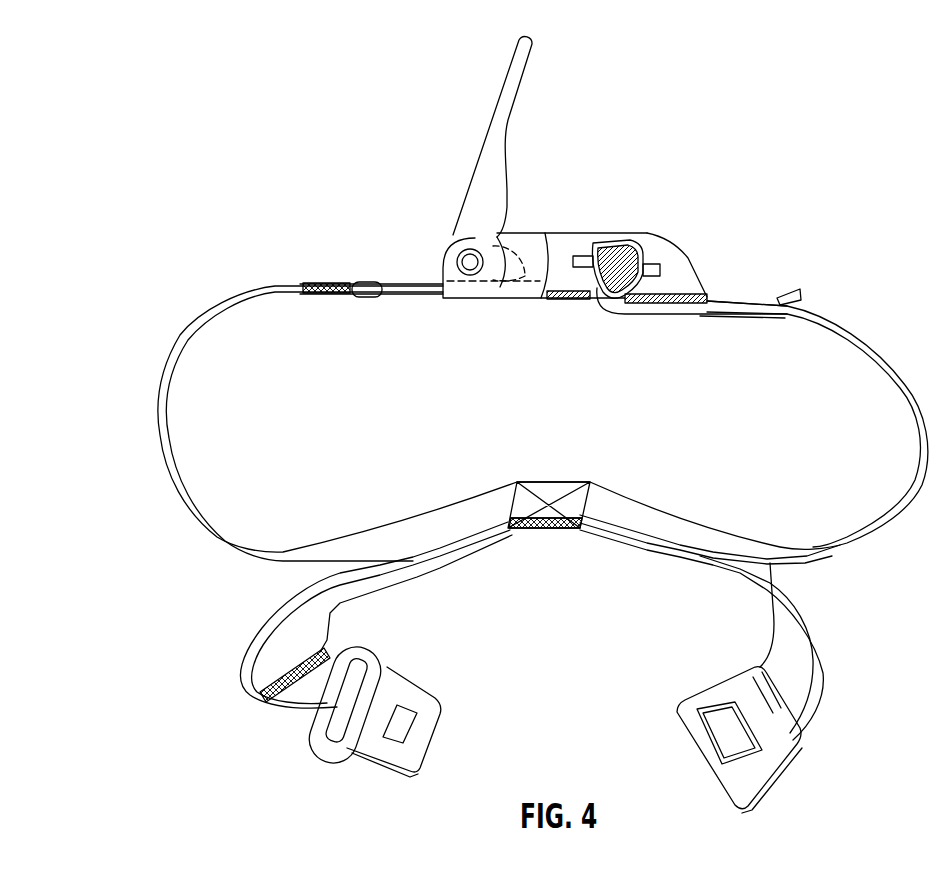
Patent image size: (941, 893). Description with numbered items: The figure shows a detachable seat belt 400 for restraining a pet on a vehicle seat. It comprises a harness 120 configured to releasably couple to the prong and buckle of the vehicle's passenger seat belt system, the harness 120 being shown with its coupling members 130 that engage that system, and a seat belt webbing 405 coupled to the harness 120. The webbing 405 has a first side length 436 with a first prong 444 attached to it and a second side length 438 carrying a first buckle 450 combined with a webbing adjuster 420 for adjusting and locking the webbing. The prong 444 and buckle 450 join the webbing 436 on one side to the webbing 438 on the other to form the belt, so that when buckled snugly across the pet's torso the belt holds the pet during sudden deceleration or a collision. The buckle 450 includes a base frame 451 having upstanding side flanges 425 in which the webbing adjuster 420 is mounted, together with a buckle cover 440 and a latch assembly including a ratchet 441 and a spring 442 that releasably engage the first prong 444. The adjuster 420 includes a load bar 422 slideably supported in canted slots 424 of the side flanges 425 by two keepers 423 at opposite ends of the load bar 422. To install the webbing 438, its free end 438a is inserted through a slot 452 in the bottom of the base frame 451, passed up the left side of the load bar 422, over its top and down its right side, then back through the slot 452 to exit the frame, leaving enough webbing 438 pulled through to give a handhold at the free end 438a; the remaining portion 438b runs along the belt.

The detachable seat belt 400 is at (219, 143).
The seat belt webbing 405 is at (176, 453).
The harness 120 is at (815, 601).
The buckles 130 is at (552, 726).
The first side length 436 is at (327, 290).
The first prong 444 is at (407, 287).
The buckle cover 440 is at (484, 148).
The ratchet 441 is at (507, 250).
The spring 442 is at (453, 247).
The first buckle 450 is at (573, 233).
The base frame 451 is at (490, 302).
The slot 452 is at (598, 302).
The side flanges 425 is at (567, 283).
The load bar 422 is at (617, 250).
The canted slots 424 is at (667, 270).
The webbing adjuster 420 is at (650, 237).
The keepers 423 is at (650, 310).
The second side length 438 is at (632, 244).
The free end of the webbing 438a is at (777, 298).
The strap lower portion 438b is at (780, 317).